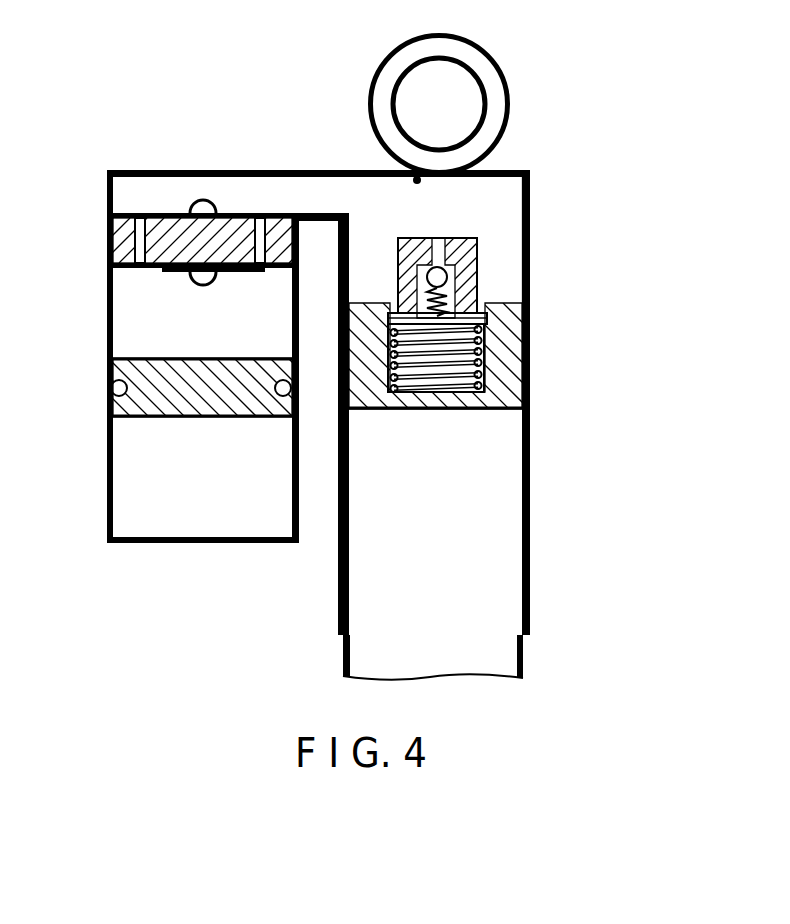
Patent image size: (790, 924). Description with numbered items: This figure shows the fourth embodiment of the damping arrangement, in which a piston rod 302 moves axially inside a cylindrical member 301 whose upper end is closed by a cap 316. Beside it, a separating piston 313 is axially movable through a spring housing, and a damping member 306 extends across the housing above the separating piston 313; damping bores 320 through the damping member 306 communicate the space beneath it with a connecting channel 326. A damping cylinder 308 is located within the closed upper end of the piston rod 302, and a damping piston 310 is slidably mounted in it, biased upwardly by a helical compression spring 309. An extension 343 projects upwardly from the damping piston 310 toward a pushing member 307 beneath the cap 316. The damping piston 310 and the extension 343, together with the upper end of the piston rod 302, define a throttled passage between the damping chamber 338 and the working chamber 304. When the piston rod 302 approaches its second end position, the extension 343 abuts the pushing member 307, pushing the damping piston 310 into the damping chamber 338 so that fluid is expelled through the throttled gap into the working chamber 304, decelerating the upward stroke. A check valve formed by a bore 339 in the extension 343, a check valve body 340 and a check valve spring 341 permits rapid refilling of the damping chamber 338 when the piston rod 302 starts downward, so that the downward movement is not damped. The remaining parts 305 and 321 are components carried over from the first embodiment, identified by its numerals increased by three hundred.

The cylindrical member 301 is at (530, 562).
The piston rod 302 is at (521, 658).
The working chamber 304 is at (517, 277).
The housing 305 is at (120, 503).
The damping member 306 is at (118, 247).
The pushing member 307 is at (414, 183).
The damping cylinder 308 is at (397, 370).
The helical compression spring 309 is at (480, 350).
The damping piston 310 is at (478, 316).
The separating piston 313 is at (145, 395).
The cap 316 is at (503, 172).
The damping bores 320 is at (138, 213).
The inner wall 321 is at (508, 190).
The connecting channel 326 is at (307, 183).
The damping chamber 338 is at (482, 380).
The bore 339 is at (437, 238).
The check valve body 340 is at (447, 274).
The check valve spring 341 is at (452, 295).
The extension 343 is at (463, 248).